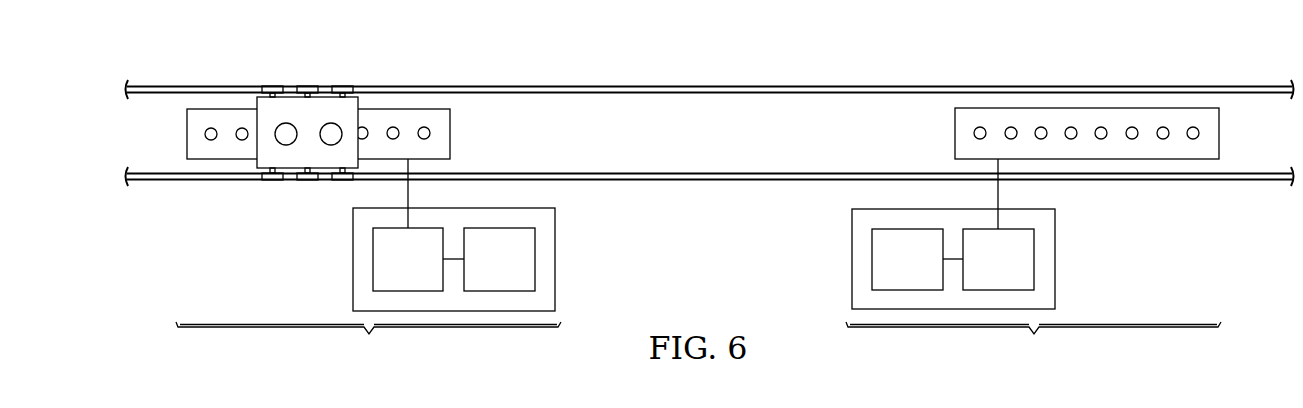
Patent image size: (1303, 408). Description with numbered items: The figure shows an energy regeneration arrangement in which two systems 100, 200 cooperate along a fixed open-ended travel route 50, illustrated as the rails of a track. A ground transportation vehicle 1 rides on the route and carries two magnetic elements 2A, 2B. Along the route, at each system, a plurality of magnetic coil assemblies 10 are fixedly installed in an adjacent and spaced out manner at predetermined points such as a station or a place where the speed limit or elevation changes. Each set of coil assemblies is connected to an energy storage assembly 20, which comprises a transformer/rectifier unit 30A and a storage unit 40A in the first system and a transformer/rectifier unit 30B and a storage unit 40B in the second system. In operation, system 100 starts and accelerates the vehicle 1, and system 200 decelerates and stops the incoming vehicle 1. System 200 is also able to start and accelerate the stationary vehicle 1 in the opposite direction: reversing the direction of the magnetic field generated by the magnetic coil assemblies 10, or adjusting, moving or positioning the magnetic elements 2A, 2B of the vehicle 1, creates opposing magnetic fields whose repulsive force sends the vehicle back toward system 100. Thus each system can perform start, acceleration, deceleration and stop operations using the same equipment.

The ground transportation vehicle 1 is at (304, 129).
The magnetic element 2A is at (274, 130).
The magnetic element 2B is at (343, 130).
The magnetic coil assembly 10 is at (236, 137).
The energy storage assembly 20 is at (703, 235).
The transformer/rectifier unit 30A is at (388, 272).
The transformer/rectifier unit 30B is at (887, 272).
The storage unit 40A is at (479, 272).
The storage unit 40B is at (978, 272).
The travel route 50 is at (675, 87).
The ground transportation system 100 is at (368, 343).
The system 200 is at (1033, 343).